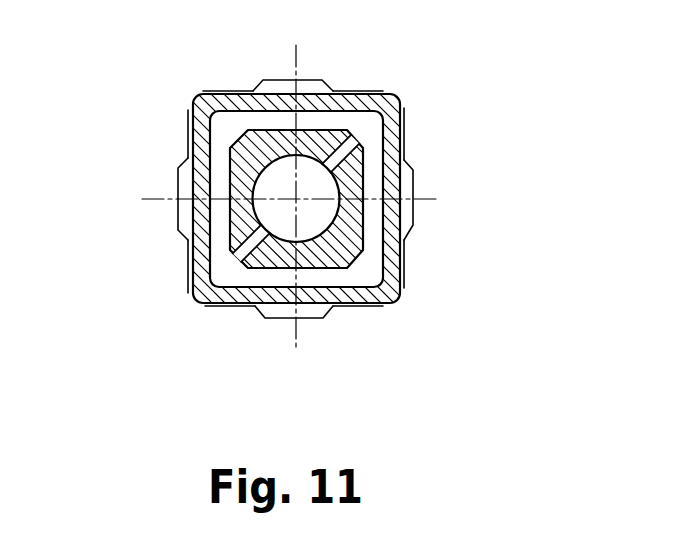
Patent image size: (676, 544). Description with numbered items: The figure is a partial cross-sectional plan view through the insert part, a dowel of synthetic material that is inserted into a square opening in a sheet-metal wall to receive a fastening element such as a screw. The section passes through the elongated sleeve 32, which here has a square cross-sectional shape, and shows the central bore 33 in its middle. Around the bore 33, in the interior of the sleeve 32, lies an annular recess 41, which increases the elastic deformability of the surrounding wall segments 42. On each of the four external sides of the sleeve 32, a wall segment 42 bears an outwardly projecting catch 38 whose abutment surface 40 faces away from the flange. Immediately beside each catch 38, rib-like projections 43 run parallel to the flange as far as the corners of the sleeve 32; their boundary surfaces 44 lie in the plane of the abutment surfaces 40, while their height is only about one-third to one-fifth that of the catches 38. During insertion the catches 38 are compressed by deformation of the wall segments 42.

The elongated sleeve 32 is at (193, 94).
The central bore 33 is at (317, 187).
The catch 38 is at (177, 182).
The abutment surface 40 is at (403, 210).
The annular recess 41 is at (368, 128).
The wall segment 42 is at (198, 212).
The rib-like projection 43 is at (187, 130).
The boundary surface 44 is at (403, 248).